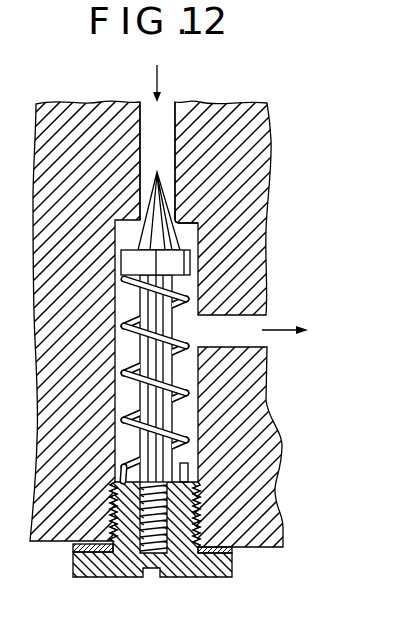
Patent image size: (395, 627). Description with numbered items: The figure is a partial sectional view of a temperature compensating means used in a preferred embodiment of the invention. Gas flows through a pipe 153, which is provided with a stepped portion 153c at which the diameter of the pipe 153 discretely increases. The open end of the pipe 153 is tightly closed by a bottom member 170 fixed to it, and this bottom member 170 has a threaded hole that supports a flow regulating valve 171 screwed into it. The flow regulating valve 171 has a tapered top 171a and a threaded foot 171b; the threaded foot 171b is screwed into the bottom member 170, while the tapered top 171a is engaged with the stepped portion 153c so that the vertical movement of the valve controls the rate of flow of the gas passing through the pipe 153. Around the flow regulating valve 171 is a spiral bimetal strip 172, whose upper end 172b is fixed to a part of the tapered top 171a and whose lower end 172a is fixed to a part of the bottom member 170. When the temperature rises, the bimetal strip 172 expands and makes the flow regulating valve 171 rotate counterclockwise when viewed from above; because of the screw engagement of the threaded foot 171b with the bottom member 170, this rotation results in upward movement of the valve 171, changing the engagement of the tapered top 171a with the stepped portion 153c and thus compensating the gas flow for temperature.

The pipe 153 is at (155, 158).
The stepped portion 153c is at (196, 223).
The bottom member 170 is at (180, 502).
The flow regulating valve 171 is at (152, 366).
The tapered top 171a is at (143, 235).
The threaded foot 171b is at (112, 501).
The spiral bimetal strip 172 is at (127, 380).
The lower end of bimetal strip 172a is at (116, 466).
The upper end of bimetal strip 172b is at (133, 263).